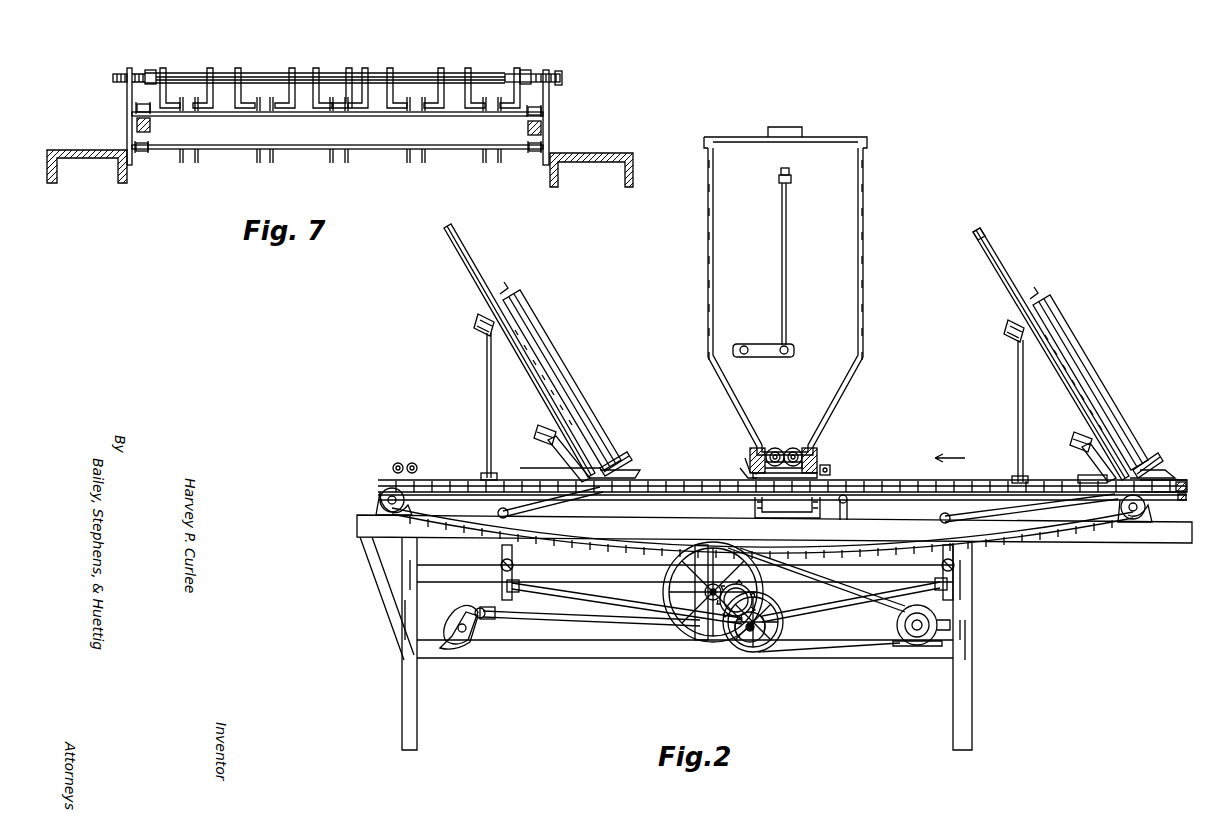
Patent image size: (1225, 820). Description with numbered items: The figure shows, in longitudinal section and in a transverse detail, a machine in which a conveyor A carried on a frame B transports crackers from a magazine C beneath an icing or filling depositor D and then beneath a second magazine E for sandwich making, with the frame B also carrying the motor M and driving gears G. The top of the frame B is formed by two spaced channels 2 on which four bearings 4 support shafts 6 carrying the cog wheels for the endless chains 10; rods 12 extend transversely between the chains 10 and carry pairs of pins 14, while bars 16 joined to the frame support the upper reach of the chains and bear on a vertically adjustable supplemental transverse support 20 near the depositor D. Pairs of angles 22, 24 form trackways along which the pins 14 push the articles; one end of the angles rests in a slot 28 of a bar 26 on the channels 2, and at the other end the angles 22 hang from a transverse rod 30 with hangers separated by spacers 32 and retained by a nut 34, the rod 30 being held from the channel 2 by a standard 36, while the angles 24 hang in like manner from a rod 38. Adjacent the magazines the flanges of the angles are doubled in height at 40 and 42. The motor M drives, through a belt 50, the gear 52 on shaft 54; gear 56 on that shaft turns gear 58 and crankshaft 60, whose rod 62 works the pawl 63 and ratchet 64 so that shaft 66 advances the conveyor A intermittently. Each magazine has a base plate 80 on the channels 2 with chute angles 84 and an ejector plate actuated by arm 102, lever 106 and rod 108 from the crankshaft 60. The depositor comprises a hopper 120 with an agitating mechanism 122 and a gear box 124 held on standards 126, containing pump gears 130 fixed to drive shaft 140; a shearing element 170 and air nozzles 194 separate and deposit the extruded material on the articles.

In FIG. 7, the channels 2 is at (92, 150).
In FIG. 2, the channels 2 is at (365, 525).
In FIG. 2, the bearings 4 is at (378, 510).
In FIG. 2, the shafts 6 is at (385, 492).
In FIG. 7, the endless chains 10 is at (137, 107).
In FIG. 2, the endless chains 10 is at (640, 483).
In FIG. 7, the rods 12 is at (312, 116).
In FIG. 7, the pins 14 is at (418, 166).
In FIG. 2, the pins 14 is at (463, 480).
In FIG. 7, the bars 16 is at (151, 126).
In FIG. 2, the bars 16 is at (904, 495).
In FIG. 2, the supplemental transverse support 20 is at (848, 510).
In FIG. 7, the angles 22 is at (283, 108).
In FIG. 7, the angles 24 is at (247, 108).
In FIG. 2, the angles 24 is at (1170, 482).
In FIG. 2, the bar 26 is at (1187, 497).
In FIG. 2, the slot 28 is at (1187, 486).
In FIG. 7, the transverse rod 30 is at (539, 76).
In FIG. 2, the transverse rod 30 is at (414, 463).
In FIG. 7, the spacers 32 is at (500, 73).
In FIG. 7, the nut 34 is at (521, 73).
In FIG. 7, the standard 36 is at (549, 100).
In FIG. 7, the transverse rod 38 is at (145, 72).
In FIG. 2, the transverse rod 38 is at (398, 463).
In FIG. 2, the doubled flange 40 is at (1078, 476).
In FIG. 2, the doubled flange 42 is at (522, 478).
In FIG. 2, the belt 50 is at (825, 565).
In FIG. 2, the gear 52 is at (670, 565).
In FIG. 2, the shaft 54 is at (705, 592).
In FIG. 2, the gear 56 is at (737, 584).
In FIG. 2, the gear 58 is at (765, 600).
In FIG. 2, the crankshaft 60 is at (745, 632).
In FIG. 2, the rod 62 is at (580, 620).
In FIG. 2, the pawl 63 is at (478, 608).
In FIG. 2, the ratchet 64 is at (460, 612).
In FIG. 2, the shaft 66 is at (464, 650).
In FIG. 2, the base plate 80 is at (626, 470).
In FIG. 2, the angles 84 is at (976, 232).
In FIG. 2, the arm 102 is at (540, 504).
In FIG. 2, the lever 106 is at (512, 552).
In FIG. 2, the rod 108 is at (572, 592).
In FIG. 2, the hopper 120 is at (708, 320).
In FIG. 2, the agitating mechanism 122 is at (766, 344).
In FIG. 2, the gear box 124 is at (818, 460).
In FIG. 2, the standards 126 is at (755, 508).
In FIG. 2, the gears 130 is at (775, 448).
In FIG. 2, the drive shaft 140 is at (795, 448).
In FIG. 2, the shearing element 170 is at (748, 460).
In FIG. 2, the nozzles 194 is at (745, 474).
In FIG. 2, the conveyor A is at (925, 458).
In FIG. 2, the frame B is at (980, 600).
In FIG. 2, the magazine C is at (1010, 262).
In FIG. 2, the icing or filling depositor D is at (705, 272).
In FIG. 2, the second magazine E is at (478, 262).
In FIG. 2, the driving gears G is at (662, 574).
In FIG. 2, the motor M is at (900, 622).